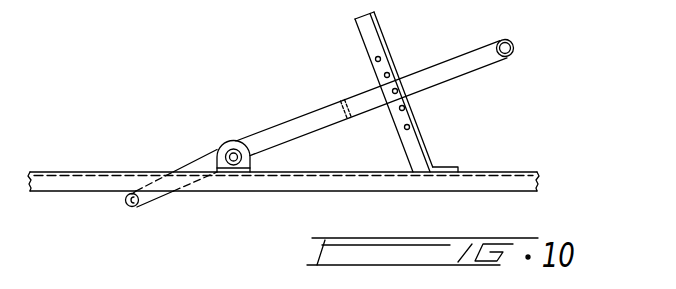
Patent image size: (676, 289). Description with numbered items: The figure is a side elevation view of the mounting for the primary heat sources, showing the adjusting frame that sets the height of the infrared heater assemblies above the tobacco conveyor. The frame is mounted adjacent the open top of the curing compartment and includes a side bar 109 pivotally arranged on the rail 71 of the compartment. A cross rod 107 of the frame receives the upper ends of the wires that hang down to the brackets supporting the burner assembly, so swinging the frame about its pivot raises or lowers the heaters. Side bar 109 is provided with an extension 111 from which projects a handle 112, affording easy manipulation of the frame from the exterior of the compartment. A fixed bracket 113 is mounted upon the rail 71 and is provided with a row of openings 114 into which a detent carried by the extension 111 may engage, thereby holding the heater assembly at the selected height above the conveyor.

The rail 71 is at (343, 191).
The cross rod 107 is at (125, 200).
The side bar 109 is at (302, 97).
The extension 111 is at (427, 68).
The handle 112 is at (514, 44).
The fixed bracket 113 is at (433, 150).
The openings 114 is at (402, 113).